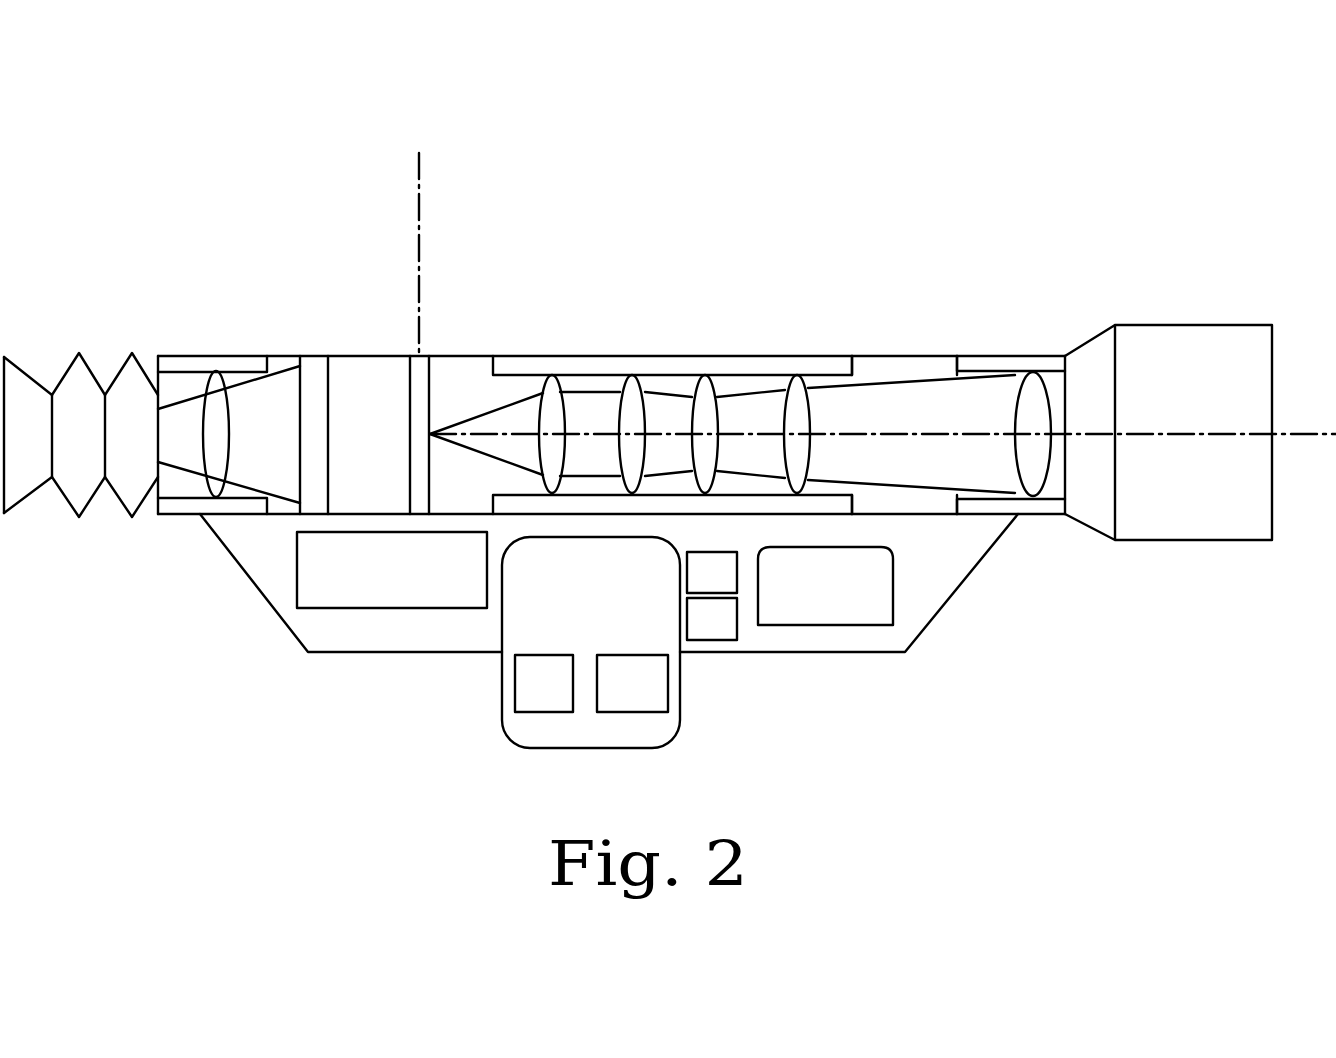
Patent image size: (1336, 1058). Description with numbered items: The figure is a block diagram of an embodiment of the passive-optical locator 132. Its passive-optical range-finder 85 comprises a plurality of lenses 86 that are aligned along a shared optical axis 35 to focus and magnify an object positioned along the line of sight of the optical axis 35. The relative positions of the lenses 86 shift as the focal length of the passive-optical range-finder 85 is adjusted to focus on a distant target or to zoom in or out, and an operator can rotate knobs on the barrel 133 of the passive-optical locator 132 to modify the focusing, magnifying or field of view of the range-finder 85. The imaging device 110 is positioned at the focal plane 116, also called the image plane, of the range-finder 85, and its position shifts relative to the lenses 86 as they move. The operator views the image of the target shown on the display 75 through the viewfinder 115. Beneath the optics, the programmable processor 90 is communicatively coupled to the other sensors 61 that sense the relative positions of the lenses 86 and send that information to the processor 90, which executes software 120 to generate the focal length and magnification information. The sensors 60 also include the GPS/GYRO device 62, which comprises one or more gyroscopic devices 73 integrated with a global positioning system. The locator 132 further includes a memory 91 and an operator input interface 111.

The passive-optical locator 132 is at (913, 213).
The viewfinder 115 is at (232, 317).
The display 75 is at (330, 412).
The imaging device 110 is at (410, 468).
The focal plane 116 is at (420, 222).
The passive-optical range-finder 85 is at (1050, 317).
The other sensors 61 is at (568, 355).
The barrel 133 is at (873, 353).
The lenses 86 is at (1052, 482).
The optical axis 35 is at (1290, 433).
The programmable processor 90 is at (297, 585).
The GPS/GYRO device 62 is at (603, 632).
The sensors 60 is at (515, 690).
The gyroscopic devices 73 is at (668, 687).
The memory 91 is at (712, 552).
The software 120 is at (707, 640).
The operator input interface 111 is at (894, 575).